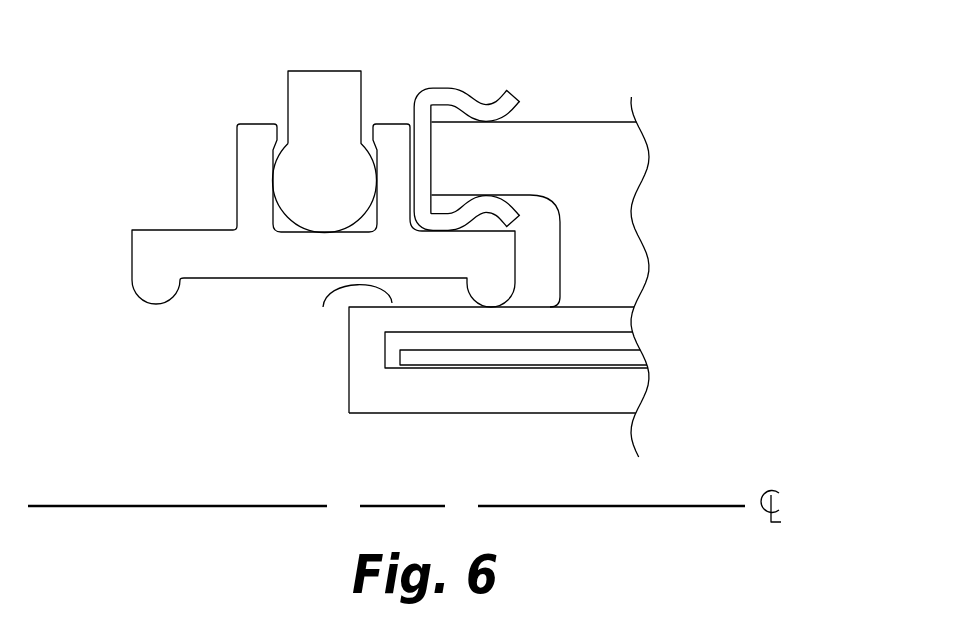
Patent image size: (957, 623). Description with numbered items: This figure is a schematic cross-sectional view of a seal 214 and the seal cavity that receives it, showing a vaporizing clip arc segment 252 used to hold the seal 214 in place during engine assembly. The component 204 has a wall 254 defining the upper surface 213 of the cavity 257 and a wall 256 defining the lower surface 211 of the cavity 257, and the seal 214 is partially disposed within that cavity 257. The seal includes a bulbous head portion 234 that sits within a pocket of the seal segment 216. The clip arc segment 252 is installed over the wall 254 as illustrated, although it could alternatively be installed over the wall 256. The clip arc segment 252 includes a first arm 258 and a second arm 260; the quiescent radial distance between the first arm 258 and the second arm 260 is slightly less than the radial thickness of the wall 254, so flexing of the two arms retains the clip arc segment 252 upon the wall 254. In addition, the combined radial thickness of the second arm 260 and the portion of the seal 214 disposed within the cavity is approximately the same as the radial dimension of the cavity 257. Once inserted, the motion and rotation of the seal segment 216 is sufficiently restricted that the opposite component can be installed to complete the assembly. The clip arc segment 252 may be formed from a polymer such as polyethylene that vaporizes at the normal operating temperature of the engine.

The seal 214 is at (215, 105).
The seal segment 216 is at (162, 230).
The ball stud 234 is at (313, 70).
The lower surface 211 is at (346, 311).
The clip arc segment 252 is at (445, 87).
The first arm 258 is at (474, 97).
The second arm 260 is at (472, 223).
The wall 254 is at (568, 157).
The upper surface 213 is at (548, 214).
The cavity 257 is at (561, 255).
The wall 256 is at (397, 393).
The component 204 is at (587, 415).